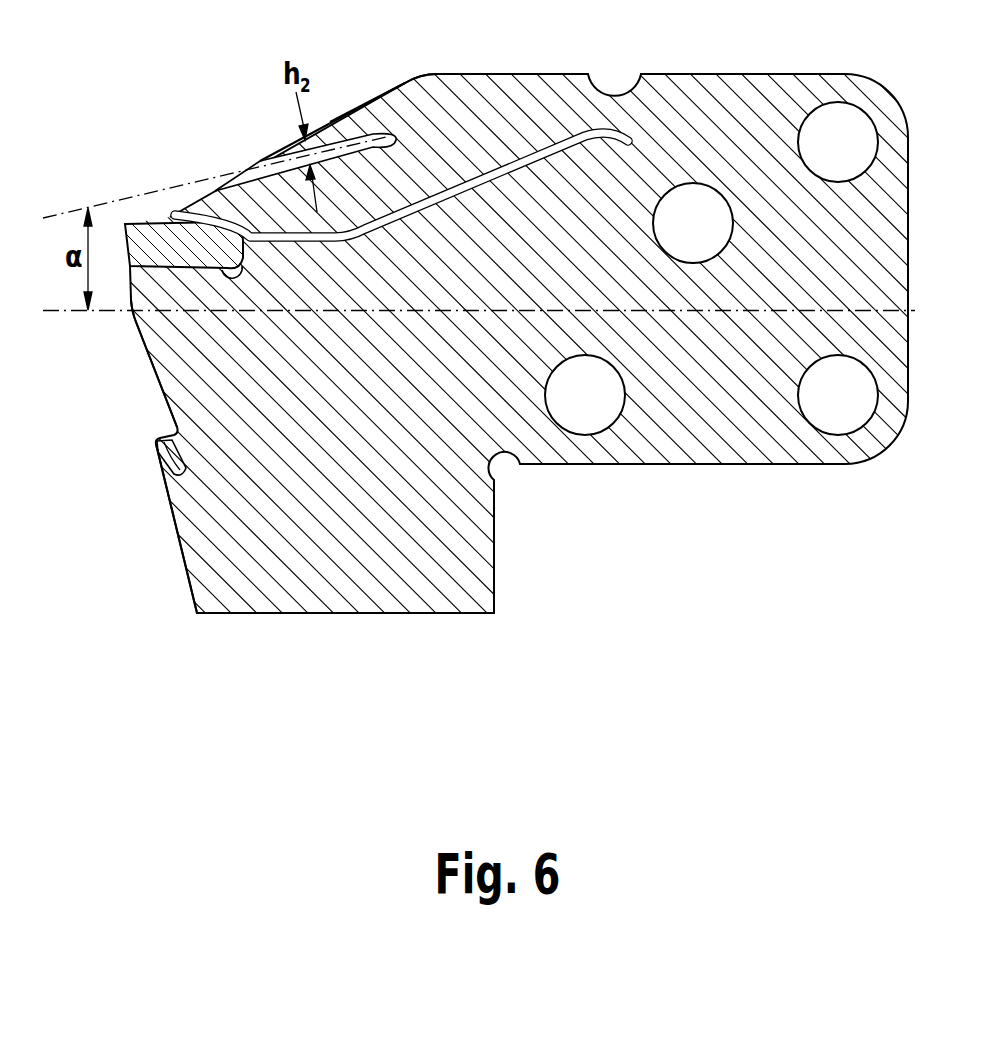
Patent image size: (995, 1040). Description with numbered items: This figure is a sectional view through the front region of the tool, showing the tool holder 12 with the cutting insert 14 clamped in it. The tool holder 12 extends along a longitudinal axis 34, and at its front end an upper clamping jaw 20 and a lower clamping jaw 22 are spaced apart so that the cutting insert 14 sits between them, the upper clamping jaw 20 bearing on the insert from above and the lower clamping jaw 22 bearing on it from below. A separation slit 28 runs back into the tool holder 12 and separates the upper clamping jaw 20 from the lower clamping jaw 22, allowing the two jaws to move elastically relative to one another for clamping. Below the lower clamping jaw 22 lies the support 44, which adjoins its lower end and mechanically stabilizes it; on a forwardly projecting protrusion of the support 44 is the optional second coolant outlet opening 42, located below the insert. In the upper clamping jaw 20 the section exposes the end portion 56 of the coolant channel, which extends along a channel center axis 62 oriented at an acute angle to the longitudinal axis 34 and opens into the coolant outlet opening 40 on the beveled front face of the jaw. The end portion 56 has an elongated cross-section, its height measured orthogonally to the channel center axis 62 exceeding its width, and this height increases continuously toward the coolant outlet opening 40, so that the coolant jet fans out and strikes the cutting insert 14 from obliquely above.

The tool holder 12 is at (455, 442).
The cutting insert 14 is at (154, 222).
The upper clamping jaw 20 is at (363, 120).
The lower clamping jaw 22 is at (203, 370).
The separation slit 28 is at (483, 173).
The longitudinal axis 34 is at (57, 312).
The coolant outlet opening 40 is at (263, 163).
The second coolant outlet opening 42 is at (157, 457).
The support 44 is at (198, 548).
The end portion 56 is at (327, 130).
The channel center axis 62 is at (62, 218).